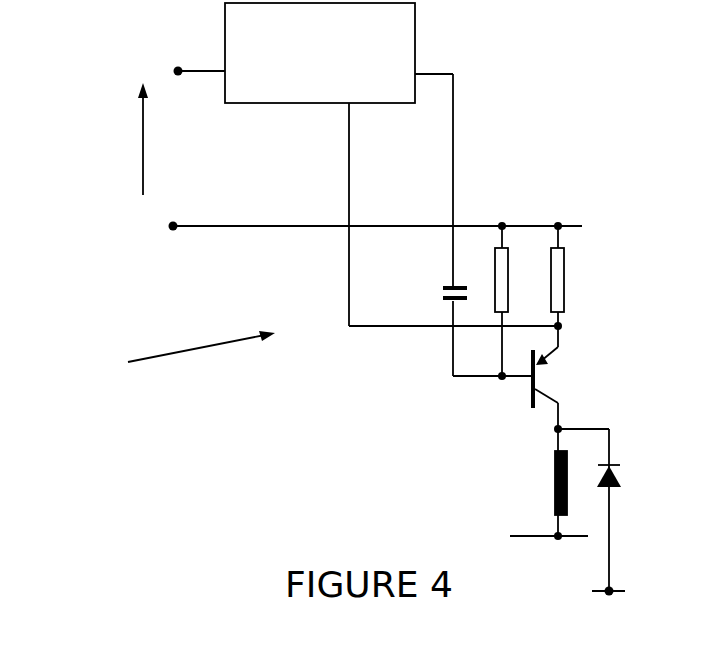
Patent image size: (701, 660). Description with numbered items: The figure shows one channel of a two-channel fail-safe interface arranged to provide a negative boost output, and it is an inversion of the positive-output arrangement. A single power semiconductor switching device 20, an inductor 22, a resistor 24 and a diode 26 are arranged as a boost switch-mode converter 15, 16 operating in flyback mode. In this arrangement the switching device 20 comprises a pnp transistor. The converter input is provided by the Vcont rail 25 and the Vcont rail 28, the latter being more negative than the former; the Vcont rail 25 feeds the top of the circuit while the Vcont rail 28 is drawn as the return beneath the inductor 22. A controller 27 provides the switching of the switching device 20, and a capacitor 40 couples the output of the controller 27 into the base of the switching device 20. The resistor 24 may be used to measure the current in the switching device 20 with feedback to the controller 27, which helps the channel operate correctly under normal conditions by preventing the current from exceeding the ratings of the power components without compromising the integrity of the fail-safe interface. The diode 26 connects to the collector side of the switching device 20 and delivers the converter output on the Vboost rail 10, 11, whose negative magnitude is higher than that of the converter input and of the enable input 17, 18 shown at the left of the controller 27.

The Vboost rail 10 is at (606, 614).
The Vboost rail 11 is at (606, 614).
The boost switch-mode converter 15 is at (142, 360).
The boost switch-mode converter 16 is at (142, 360).
The enable input 17 is at (127, 131).
The enable input 18 is at (127, 131).
The power semiconductor switching device 20 is at (565, 377).
The inductor 22 is at (537, 483).
The resistor 24 is at (582, 280).
The Vcont rail 25 is at (376, 203).
The diode 26 is at (633, 466).
The controller 27 is at (320, 53).
The Vcont rail 28 is at (549, 554).
The capacitor 40 is at (432, 295).